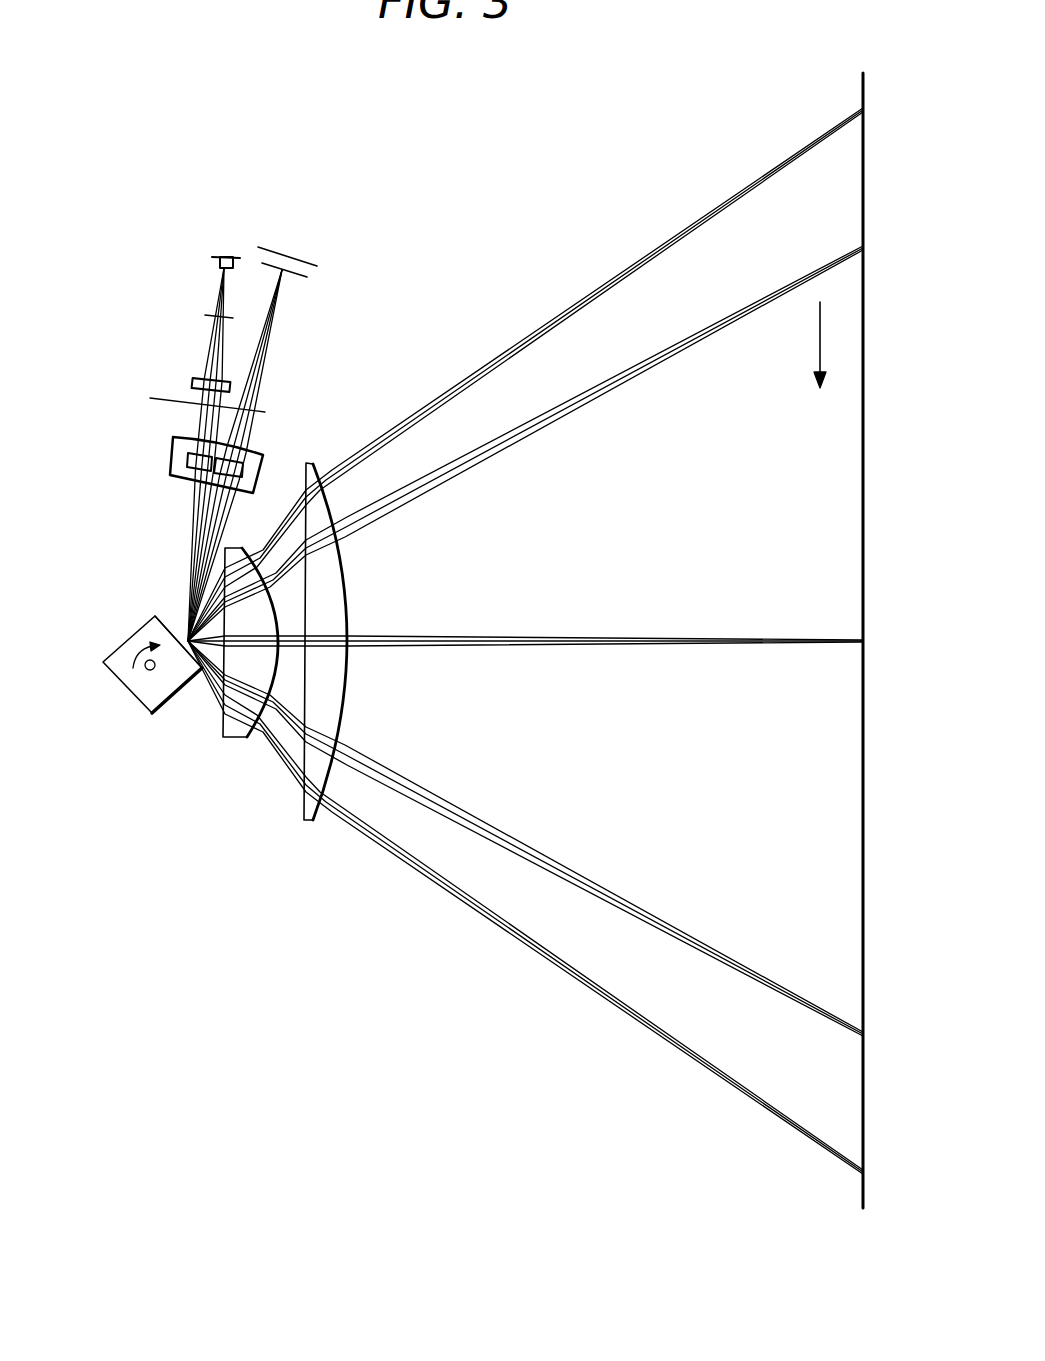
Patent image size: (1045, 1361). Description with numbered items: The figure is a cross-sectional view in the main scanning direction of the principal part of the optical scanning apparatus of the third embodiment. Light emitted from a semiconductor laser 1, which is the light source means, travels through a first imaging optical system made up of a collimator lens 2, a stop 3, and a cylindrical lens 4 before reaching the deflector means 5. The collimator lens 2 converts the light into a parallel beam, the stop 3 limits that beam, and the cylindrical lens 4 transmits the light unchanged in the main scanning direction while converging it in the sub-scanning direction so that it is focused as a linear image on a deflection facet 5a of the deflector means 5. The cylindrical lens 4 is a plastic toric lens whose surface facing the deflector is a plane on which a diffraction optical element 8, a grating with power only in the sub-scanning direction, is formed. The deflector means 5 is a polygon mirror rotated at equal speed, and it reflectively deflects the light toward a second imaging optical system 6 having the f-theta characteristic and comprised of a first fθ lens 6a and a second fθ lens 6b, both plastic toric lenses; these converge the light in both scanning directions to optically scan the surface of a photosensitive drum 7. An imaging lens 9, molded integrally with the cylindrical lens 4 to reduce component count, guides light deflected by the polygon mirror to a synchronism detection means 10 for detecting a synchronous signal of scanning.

The semiconductor laser 1 is at (228, 257).
The synchronism detection means 10 is at (305, 262).
The collimator lens 2 is at (192, 381).
The stop 3 is at (162, 403).
The cylindrical lens 4 is at (172, 452).
The diffraction optical element 8 is at (182, 479).
The imaging lens 9 is at (250, 456).
The deflector means 5 is at (133, 620).
The deflection facet 5a is at (166, 614).
The second imaging optical system 6 is at (272, 687).
The first fθ lens 6a is at (232, 740).
The second fθ lens 6b is at (316, 679).
The photosensitive drum 7 is at (867, 496).